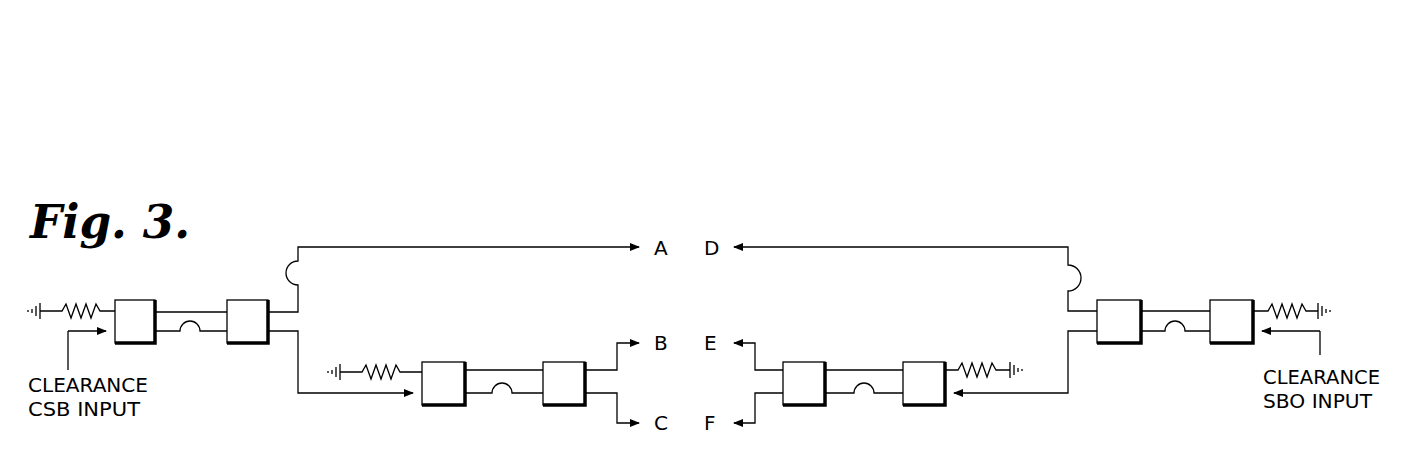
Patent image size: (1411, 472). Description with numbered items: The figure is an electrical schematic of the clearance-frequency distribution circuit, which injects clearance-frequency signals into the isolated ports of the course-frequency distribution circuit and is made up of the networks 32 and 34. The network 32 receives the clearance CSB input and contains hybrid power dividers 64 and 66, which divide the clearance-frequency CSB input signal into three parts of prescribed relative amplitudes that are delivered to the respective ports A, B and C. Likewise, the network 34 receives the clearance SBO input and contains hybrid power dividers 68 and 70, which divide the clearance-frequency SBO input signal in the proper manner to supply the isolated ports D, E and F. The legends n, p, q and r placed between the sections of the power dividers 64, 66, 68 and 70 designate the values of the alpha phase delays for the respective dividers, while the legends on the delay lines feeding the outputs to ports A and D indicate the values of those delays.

The network 32 is at (309, 409).
The network 34 is at (1049, 412).
The hybrid power divider 64 is at (207, 299).
The hybrid power divider 66 is at (517, 358).
The hybrid power divider 68 is at (880, 341).
The hybrid power divider 70 is at (1185, 279).